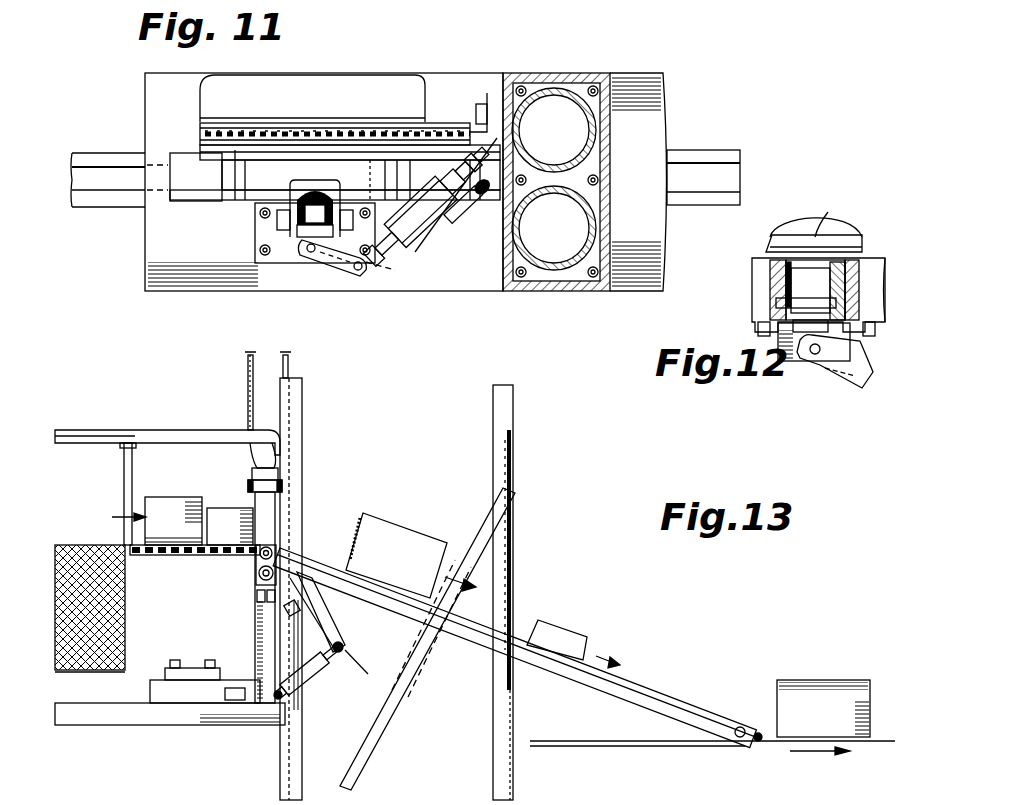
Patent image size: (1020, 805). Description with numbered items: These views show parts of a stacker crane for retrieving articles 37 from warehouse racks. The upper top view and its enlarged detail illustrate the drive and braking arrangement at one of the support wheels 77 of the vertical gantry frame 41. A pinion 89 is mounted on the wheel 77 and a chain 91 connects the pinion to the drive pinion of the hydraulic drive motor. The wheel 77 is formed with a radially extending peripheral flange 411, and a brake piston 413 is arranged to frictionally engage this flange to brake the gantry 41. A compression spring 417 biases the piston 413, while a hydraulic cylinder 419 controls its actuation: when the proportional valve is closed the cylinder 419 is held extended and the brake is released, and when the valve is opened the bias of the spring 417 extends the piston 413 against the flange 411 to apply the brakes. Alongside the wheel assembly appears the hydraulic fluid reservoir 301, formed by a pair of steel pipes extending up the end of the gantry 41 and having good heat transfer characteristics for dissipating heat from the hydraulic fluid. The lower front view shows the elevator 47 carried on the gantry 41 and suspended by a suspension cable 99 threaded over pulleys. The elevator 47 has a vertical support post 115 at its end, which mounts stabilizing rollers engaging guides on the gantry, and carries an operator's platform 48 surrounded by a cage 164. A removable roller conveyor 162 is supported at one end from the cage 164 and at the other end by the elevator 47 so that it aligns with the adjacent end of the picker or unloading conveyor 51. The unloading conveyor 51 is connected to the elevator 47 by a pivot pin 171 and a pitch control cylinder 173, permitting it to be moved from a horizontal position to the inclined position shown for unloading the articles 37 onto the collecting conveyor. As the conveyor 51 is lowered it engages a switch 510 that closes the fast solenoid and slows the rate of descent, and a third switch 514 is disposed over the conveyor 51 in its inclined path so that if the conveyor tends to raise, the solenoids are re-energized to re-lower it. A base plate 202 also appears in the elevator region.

In FIG. 11, the hydraulic fluid reservoir 301 is at (572, 75).
In FIG. 11, the chain 91 is at (398, 124).
In FIG. 11, the pinion 89 is at (200, 140).
In FIG. 11, the peripheral flange 411 is at (400, 145).
In FIG. 12, the peripheral flange 411 is at (774, 242).
In FIG. 11, the support wheel 77 is at (198, 200).
In FIG. 12, the support wheel 77 is at (838, 224).
In FIG. 11, the compression spring 417 is at (293, 218).
In FIG. 12, the compression spring 417 is at (770, 284).
In FIG. 11, the brake piston 413 is at (305, 250).
In FIG. 12, the brake piston 413 is at (858, 262).
In FIG. 11, the hydraulic cylinder 419 is at (400, 246).
In FIG. 13, the gantry frame 41 is at (513, 455).
In FIG. 13, the suspension cable 99 is at (292, 372).
In FIG. 13, the article 37 is at (158, 497).
In FIG. 13, the cage 164 is at (103, 545).
In FIG. 13, the removable roller conveyor 162 is at (145, 557).
In FIG. 13, the operator's platform 48 is at (85, 672).
In FIG. 13, the elevator 47 is at (162, 725).
In FIG. 13, the vertical support post 115 is at (256, 620).
In FIG. 13, the base plate 202 is at (190, 667).
In FIG. 13, the pivot pin 171 is at (258, 575).
In FIG. 13, the third switch 514 is at (285, 548).
In FIG. 13, the unloading conveyor 51 is at (630, 676).
In FIG. 13, the switch 510 is at (300, 590).
In FIG. 13, the pitch control cylinder 173 is at (310, 672).